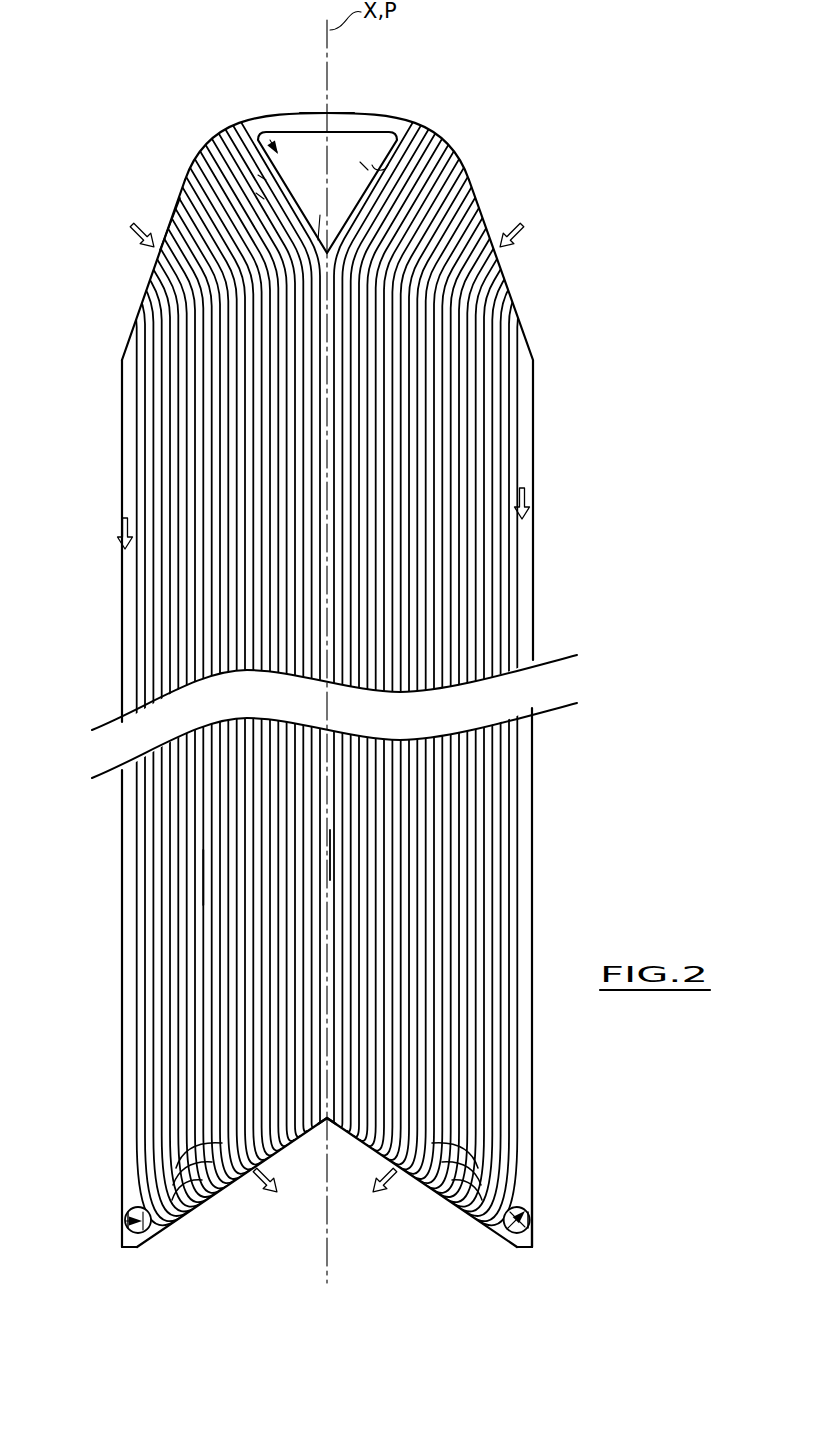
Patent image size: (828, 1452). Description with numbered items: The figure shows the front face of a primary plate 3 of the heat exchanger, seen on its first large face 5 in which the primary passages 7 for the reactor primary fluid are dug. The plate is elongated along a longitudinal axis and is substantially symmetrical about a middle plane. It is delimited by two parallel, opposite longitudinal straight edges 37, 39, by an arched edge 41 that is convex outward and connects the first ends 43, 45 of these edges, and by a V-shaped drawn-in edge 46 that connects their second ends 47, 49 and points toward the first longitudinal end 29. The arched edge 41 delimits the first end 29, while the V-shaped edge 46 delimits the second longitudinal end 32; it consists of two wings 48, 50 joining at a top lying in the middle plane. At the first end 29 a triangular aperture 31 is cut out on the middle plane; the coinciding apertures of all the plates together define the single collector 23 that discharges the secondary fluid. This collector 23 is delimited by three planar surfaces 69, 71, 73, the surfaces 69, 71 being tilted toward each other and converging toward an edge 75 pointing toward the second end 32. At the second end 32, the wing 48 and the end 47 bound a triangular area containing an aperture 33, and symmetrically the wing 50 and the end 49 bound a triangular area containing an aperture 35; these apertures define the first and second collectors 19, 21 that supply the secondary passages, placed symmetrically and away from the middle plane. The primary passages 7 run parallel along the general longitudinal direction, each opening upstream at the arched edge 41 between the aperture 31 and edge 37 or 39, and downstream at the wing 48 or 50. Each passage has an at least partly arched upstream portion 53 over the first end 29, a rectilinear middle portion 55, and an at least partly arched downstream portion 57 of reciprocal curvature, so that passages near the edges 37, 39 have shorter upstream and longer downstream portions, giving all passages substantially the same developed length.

The primary plate 3 is at (110, 513).
The first large face 5 is at (208, 214).
The primary passages 7 is at (500, 455).
The first collector 19 is at (125, 1221).
The second collector 21 is at (531, 1213).
The single collector 23 is at (261, 128).
The first longitudinal end 29 is at (464, 152).
The triangular aperture 31 is at (327, 192).
The second longitudinal end 32 is at (548, 1182).
The aperture 33 is at (125, 1214).
The aperture 35 is at (533, 1229).
The longitudinal straight edge 37 is at (121, 808).
The longitudinal straight edge 39 is at (534, 762).
The arched edge 41 is at (222, 126).
The first end 43 is at (122, 380).
The first end 45 is at (536, 370).
The V-shaped drawn-in edge 46 is at (298, 1162).
The second end 47 is at (125, 1245).
The wing 48 is at (168, 1243).
The second end 49 is at (533, 1247).
The wing 50 is at (500, 1245).
The upstream portion 53 is at (262, 195).
The middle portion 55 is at (185, 906).
The downstream portion 57 is at (415, 1188).
The planar surface 69 is at (286, 160).
The planar surface 71 is at (372, 165).
The planar surface 73 is at (318, 141).
The edge 75 is at (320, 215).